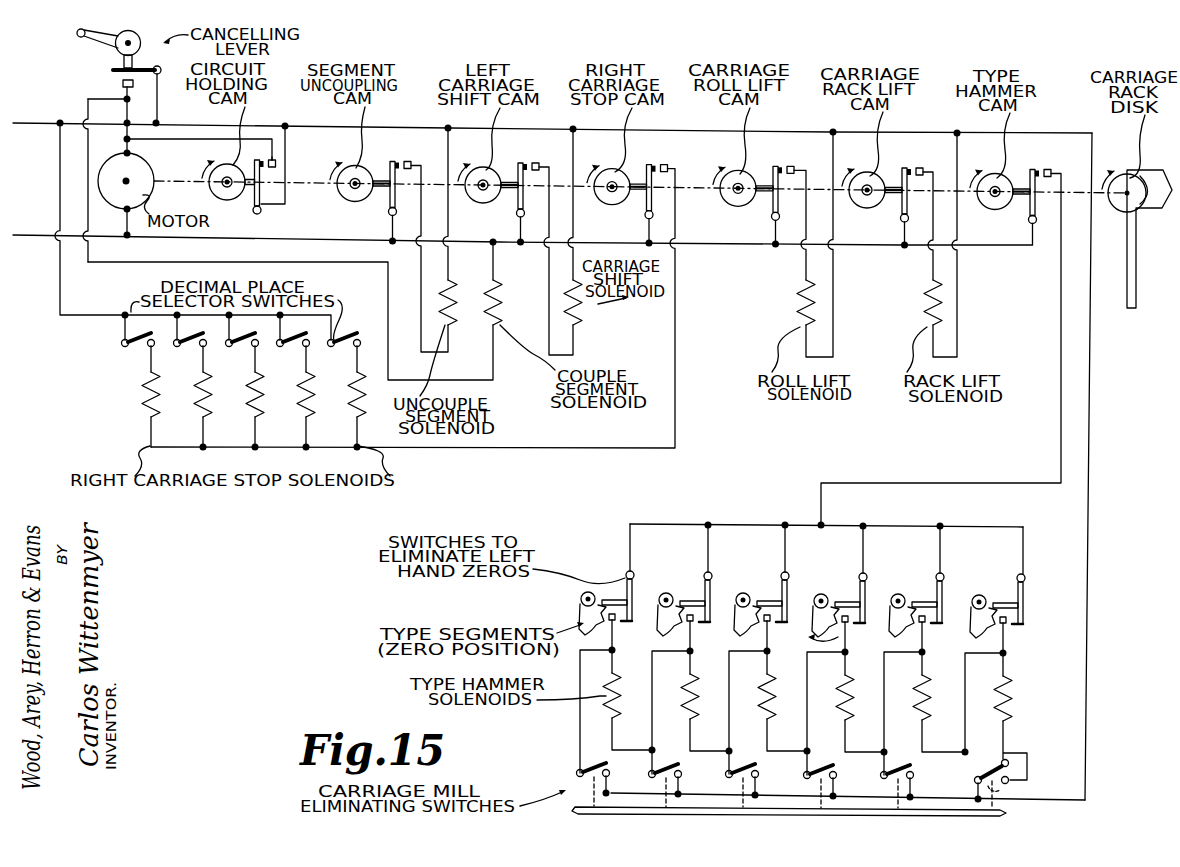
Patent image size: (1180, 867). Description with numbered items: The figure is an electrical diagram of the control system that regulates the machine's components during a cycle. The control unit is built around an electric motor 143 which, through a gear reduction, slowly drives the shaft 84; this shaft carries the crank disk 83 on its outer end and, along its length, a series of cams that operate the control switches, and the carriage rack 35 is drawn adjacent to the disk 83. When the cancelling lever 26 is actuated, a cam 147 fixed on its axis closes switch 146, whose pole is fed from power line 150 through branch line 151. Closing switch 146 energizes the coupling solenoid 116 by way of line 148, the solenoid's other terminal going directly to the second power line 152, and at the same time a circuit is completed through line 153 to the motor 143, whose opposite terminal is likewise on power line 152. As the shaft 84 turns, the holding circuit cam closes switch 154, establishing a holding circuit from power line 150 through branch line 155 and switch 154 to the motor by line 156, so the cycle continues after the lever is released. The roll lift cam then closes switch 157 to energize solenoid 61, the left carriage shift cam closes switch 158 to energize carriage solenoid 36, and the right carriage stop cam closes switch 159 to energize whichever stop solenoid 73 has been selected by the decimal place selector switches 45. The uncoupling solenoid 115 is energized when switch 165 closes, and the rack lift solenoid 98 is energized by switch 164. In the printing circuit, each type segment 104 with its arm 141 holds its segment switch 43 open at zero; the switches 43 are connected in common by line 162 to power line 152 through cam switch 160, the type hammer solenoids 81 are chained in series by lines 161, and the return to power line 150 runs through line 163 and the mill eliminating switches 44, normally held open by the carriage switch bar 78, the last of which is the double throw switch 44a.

The cancelling lever 26 is at (77, 33).
The cam 147 is at (136, 34).
The switch 146 is at (113, 71).
The power line 150 is at (35, 112).
The second power line 152 is at (30, 232).
The branch line 151 is at (159, 110).
The line 153 is at (126, 131).
The electric motor 143 is at (98, 177).
The shaft 84 is at (176, 183).
The holding switch 154 is at (260, 211).
The branch line 155 is at (287, 163).
The line 156 is at (257, 158).
The switch 165 is at (392, 155).
The switch 158 is at (515, 158).
The switch 159 is at (645, 160).
The switch 157 is at (775, 161).
The switch 164 is at (899, 163).
The cam switch 160 is at (1027, 165).
The crank disk 83 is at (1116, 212).
The carriage rack 35 is at (1136, 285).
The line 148 is at (248, 262).
The uncouple segment solenoid 115 is at (452, 295).
The coupling solenoid 116 is at (500, 295).
The carriage solenoid 36 is at (583, 322).
The solenoid 61 is at (800, 300).
The rack lift solenoid 98 is at (926, 300).
The line 162 is at (1058, 292).
The line 163 is at (1089, 546).
The decimal place selector switches 45 is at (128, 347).
The stop solenoid 73 is at (140, 392).
The type segment 104 is at (581, 600).
The type segment arm 141 is at (699, 599).
The segment switch 43 is at (712, 590).
The lines 161 is at (619, 697).
The type hammer solenoid 81 is at (697, 700).
The mill eliminating switch 44 is at (581, 768).
The double throw switch 44a is at (1001, 783).
The carriage switch bar 78 is at (1005, 812).